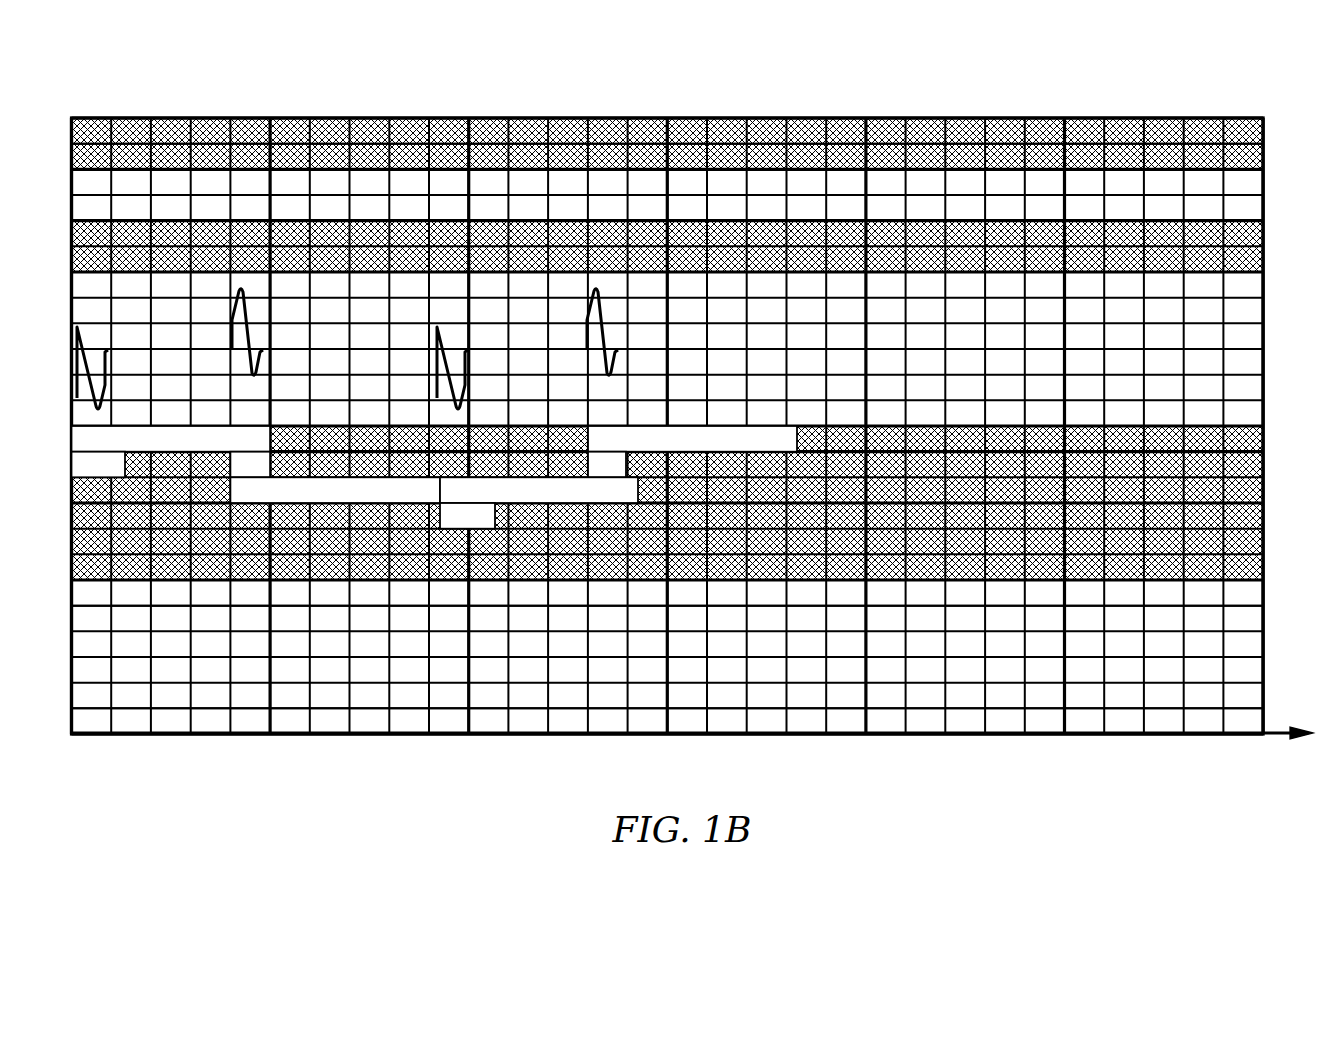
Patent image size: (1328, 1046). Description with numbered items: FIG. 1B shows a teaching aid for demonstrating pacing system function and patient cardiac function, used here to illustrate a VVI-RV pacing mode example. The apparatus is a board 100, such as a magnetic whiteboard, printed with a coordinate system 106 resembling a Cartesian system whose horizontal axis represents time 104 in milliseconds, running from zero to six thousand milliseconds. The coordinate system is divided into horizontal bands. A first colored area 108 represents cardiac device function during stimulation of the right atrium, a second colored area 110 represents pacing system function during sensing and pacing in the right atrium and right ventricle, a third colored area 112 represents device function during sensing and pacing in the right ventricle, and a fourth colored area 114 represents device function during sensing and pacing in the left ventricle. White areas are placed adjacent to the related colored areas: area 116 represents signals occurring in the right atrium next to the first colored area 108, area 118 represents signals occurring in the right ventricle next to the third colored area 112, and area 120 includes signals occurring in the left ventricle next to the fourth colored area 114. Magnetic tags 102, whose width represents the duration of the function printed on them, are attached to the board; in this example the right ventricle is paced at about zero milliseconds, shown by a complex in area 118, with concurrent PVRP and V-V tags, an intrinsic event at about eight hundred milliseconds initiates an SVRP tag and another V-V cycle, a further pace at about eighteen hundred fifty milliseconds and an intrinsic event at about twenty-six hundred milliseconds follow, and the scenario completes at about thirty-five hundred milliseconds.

The board 100 is at (1182, 89).
The magnetic tags 102 is at (690, 427).
The time 104 is at (1283, 733).
The printed coordinate system 106 is at (1225, 309).
The first colored area 108 is at (67, 121).
The second colored area 110 is at (67, 224).
The third colored area 112 is at (67, 457).
The fourth colored area 114 is at (67, 507).
The area representing right atrial signals 116 is at (67, 172).
The area representing right ventricular signals 118 is at (67, 278).
The area representing left ventricular signals 120 is at (67, 585).